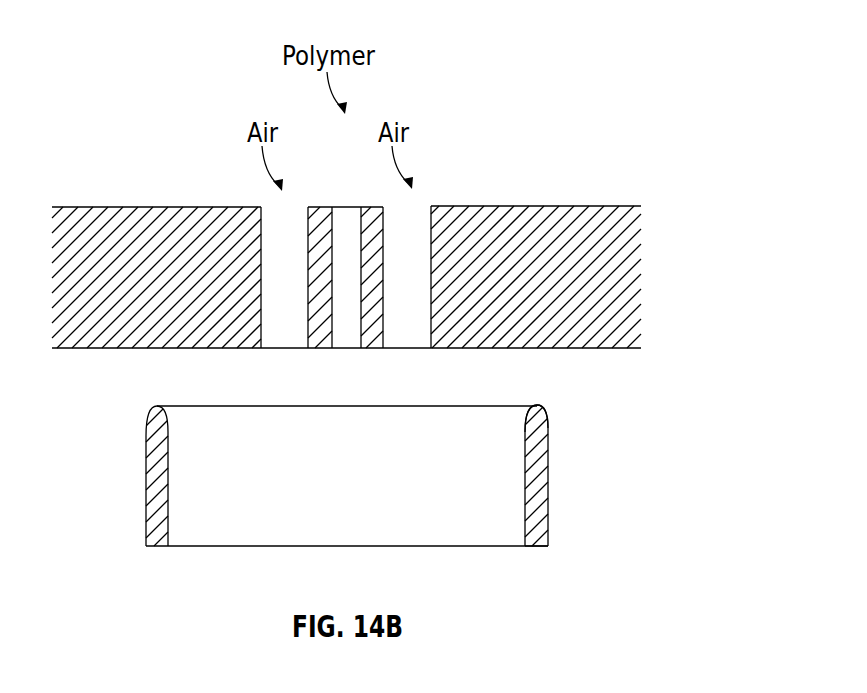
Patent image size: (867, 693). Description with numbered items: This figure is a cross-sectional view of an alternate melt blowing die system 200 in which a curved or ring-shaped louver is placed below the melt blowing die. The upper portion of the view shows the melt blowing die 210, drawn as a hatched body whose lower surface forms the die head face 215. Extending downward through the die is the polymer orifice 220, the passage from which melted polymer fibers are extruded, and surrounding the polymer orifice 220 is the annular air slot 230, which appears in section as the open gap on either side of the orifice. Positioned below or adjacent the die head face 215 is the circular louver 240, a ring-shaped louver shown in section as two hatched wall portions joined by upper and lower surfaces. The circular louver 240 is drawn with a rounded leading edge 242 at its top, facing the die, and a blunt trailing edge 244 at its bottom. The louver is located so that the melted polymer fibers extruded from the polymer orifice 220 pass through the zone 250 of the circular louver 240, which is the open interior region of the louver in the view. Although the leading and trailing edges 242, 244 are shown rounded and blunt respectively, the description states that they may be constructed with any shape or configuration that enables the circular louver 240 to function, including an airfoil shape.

The melt blowing die system 200 is at (603, 93).
The melt blowing die 210 is at (585, 206).
The die head face 215 is at (590, 348).
The polymer orifice 220 is at (362, 231).
The annular air slot 230 is at (431, 232).
The circular louver 240 is at (548, 437).
The rounded leading edge 242 is at (530, 408).
The blunt trailing edge 244 is at (537, 547).
The zone 250 is at (365, 489).